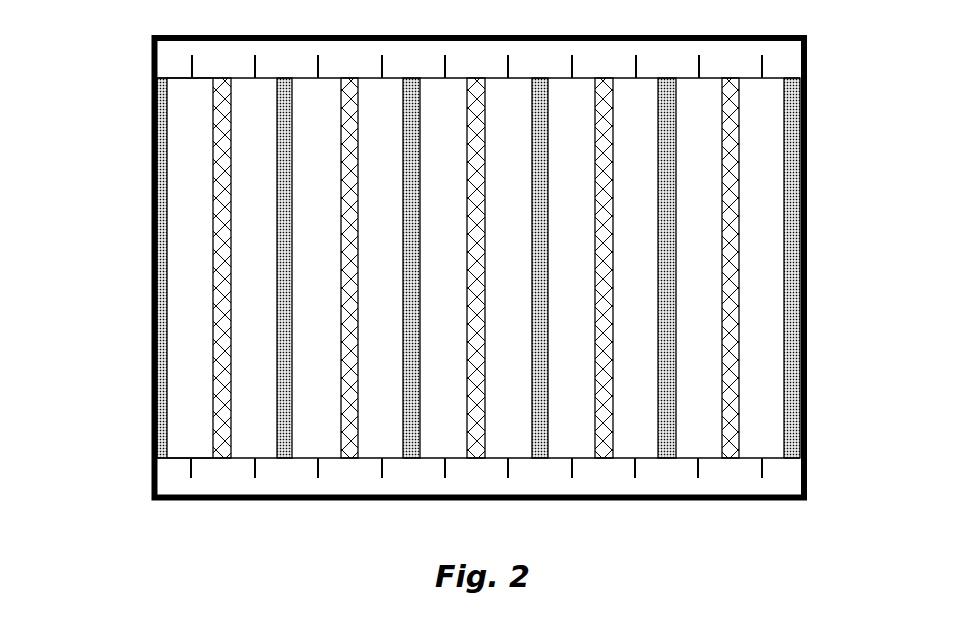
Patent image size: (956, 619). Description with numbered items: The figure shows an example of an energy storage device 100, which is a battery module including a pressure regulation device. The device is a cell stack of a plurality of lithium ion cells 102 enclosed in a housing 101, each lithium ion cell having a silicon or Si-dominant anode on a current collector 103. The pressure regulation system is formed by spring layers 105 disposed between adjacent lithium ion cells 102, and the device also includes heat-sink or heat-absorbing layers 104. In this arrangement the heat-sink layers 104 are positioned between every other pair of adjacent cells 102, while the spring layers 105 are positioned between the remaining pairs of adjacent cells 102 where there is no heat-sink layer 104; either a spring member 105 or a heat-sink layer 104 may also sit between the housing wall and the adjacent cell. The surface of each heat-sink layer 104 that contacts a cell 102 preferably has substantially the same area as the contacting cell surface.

The energy storage device 100 is at (828, 78).
The housing 101 is at (150, 56).
The lithium ion cells 102 is at (187, 251).
The current collector 103 is at (188, 467).
The heat-sink layer 104 is at (221, 292).
The spring layer 105 is at (156, 168).